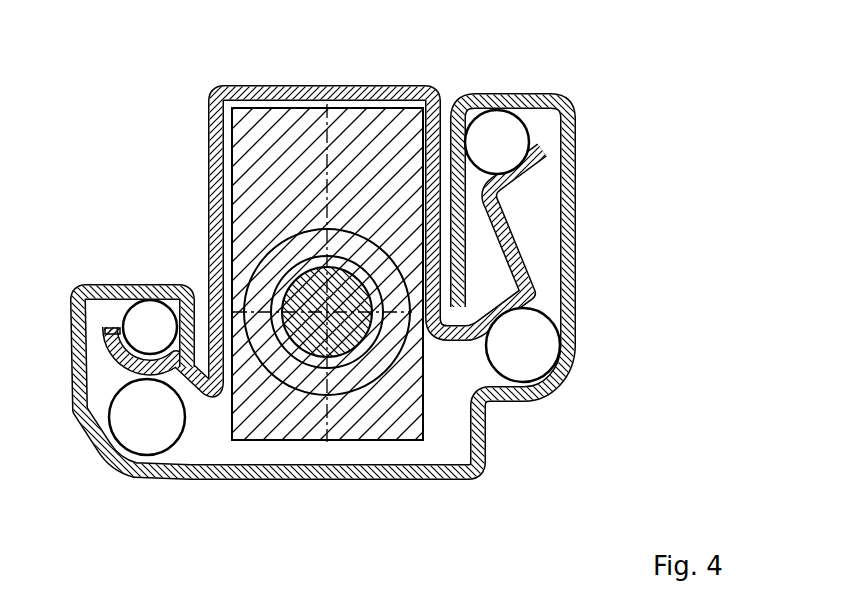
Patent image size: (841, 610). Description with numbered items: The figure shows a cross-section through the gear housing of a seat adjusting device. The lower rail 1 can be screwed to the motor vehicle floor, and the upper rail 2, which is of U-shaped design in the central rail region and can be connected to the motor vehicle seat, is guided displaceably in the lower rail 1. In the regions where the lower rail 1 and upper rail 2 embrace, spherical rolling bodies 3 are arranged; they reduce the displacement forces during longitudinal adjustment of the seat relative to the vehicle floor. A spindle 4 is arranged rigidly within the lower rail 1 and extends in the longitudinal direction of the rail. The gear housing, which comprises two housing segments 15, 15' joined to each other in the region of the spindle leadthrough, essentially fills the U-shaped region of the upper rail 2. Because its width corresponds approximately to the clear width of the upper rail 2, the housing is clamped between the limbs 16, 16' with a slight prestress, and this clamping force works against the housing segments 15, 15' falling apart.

The lower rail 1 is at (203, 470).
The upper rail 2 is at (257, 90).
The spherical rolling bodies 3 is at (508, 130).
The spindle 4 is at (310, 330).
The housing segment 15 is at (327, 324).
The housing segment 15' is at (229, 333).
The limb 16 is at (160, 292).
The limb 16' is at (468, 173).